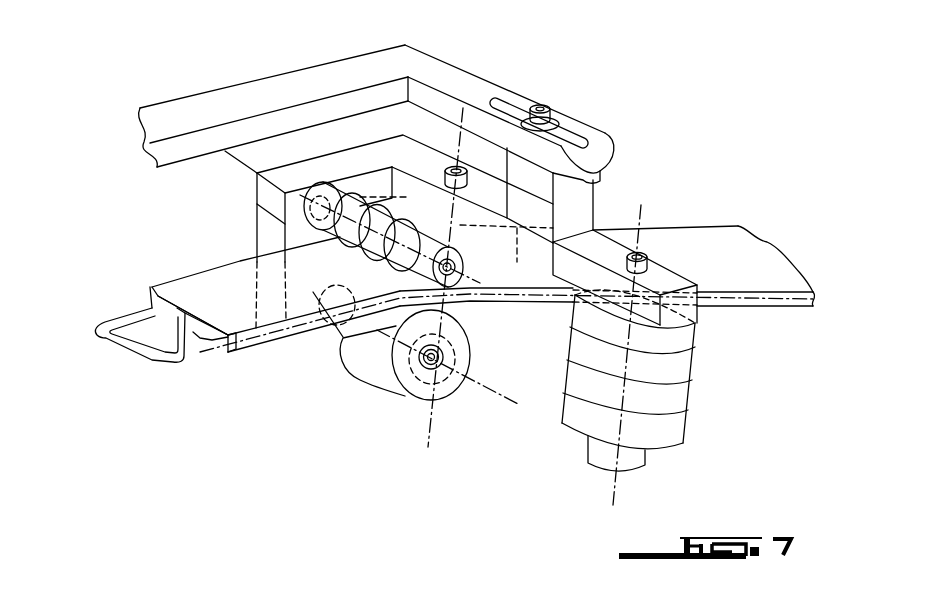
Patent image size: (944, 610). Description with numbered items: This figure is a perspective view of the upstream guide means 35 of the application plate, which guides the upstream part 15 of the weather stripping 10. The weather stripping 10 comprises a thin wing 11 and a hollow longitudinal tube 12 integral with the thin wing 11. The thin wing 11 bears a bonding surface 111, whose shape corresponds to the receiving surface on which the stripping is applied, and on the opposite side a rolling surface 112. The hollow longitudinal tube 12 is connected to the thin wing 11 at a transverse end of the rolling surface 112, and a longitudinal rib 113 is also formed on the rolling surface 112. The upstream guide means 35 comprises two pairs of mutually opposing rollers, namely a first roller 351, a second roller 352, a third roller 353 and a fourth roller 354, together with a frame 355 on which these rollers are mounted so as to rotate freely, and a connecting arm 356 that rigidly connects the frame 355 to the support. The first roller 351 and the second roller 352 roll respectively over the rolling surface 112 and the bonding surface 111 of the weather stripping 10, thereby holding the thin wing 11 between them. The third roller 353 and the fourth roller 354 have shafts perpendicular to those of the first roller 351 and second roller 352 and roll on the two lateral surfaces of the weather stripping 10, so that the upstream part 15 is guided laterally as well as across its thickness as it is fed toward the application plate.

The weather stripping 10 is at (137, 277).
The thin wing 11 is at (180, 290).
The hollow longitudinal tube 12 is at (137, 353).
The upstream part 15 is at (707, 247).
The upstream guide means 35 is at (660, 143).
The bonding surface 111 is at (225, 275).
The rolling surface 112 is at (217, 360).
The longitudinal rib 113 is at (195, 353).
The first roller 351 is at (383, 370).
The second roller 352 is at (357, 255).
The third roller 353 is at (490, 317).
The fourth roller 354 is at (667, 368).
The frame 355 is at (607, 245).
The connecting arm 356 is at (228, 100).